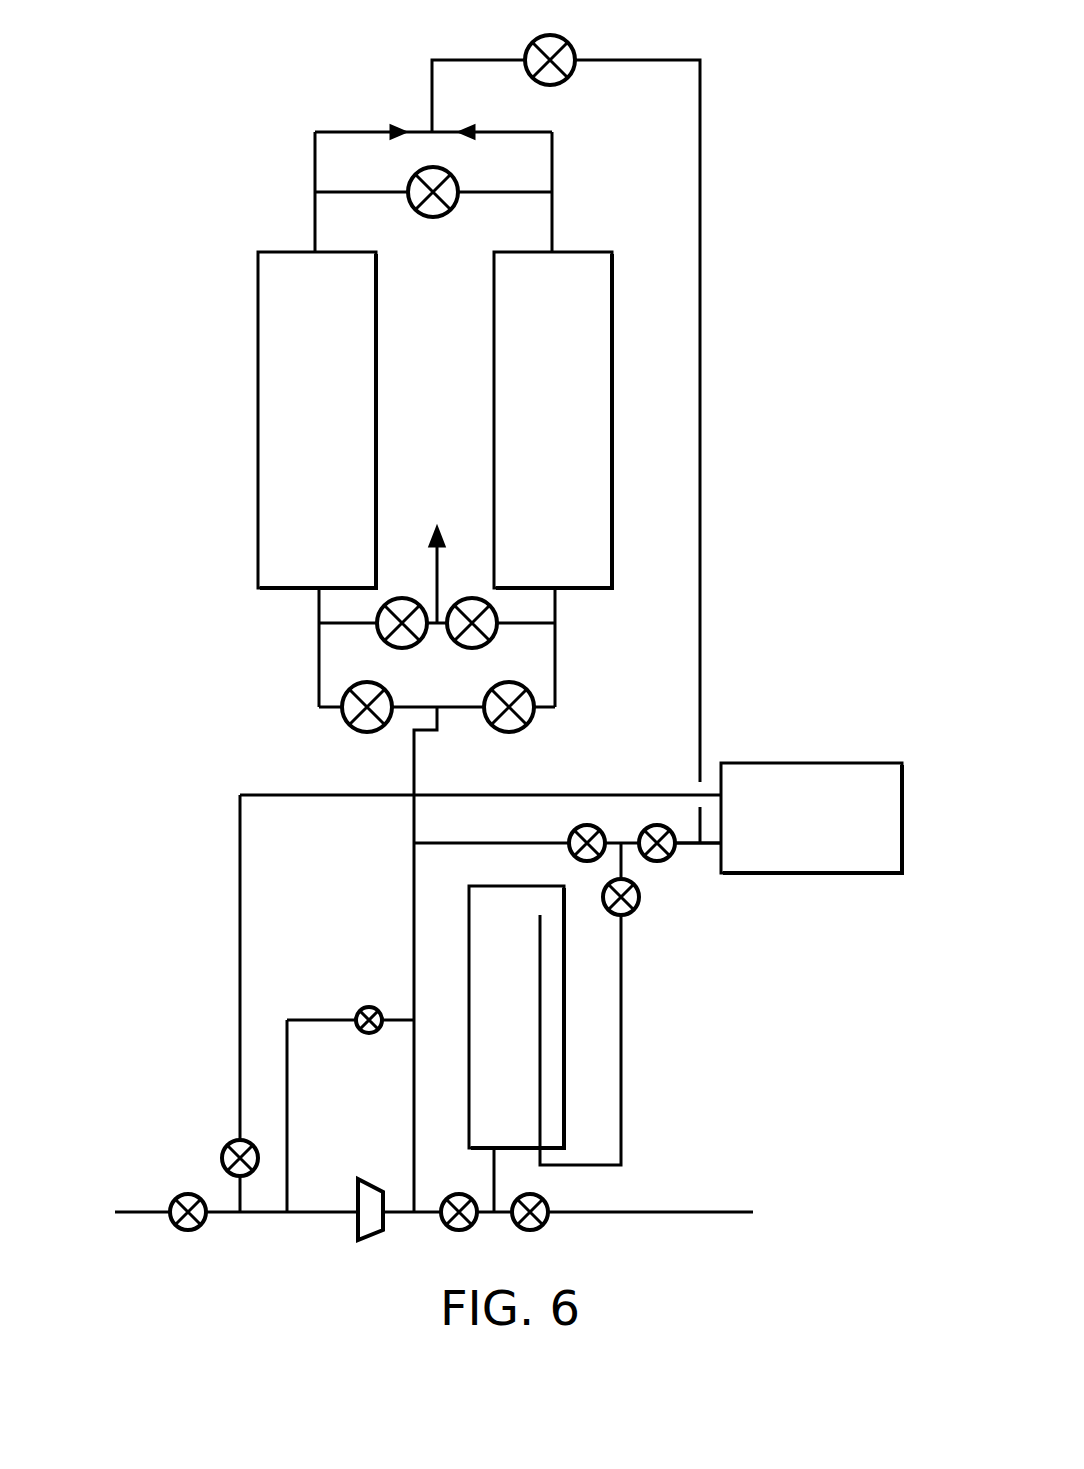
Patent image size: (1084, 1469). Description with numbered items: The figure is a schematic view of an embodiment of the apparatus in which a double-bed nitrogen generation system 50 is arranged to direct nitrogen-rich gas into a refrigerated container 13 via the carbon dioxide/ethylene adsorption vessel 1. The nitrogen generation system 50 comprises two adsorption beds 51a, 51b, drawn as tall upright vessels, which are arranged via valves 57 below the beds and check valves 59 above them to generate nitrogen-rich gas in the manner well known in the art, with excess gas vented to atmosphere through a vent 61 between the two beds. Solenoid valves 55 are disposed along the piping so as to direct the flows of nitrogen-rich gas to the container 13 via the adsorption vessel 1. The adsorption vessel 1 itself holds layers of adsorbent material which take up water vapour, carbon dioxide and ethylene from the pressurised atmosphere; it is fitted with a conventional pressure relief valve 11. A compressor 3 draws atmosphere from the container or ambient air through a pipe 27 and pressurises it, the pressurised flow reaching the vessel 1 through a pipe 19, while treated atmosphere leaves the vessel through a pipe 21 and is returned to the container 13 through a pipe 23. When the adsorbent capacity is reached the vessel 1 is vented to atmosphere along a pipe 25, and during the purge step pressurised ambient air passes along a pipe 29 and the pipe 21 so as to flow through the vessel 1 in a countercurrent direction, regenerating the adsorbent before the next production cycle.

The adsorption vessel 1 is at (458, 916).
The compressor 3 is at (384, 1232).
The pressure relief valve 11 is at (369, 1006).
The refrigerated container 13 is at (864, 763).
The pipe 19 is at (494, 1170).
The pipe 21 is at (622, 1005).
The pipe 23 is at (692, 848).
The pipe 25 is at (716, 1210).
The pipe 27 is at (140, 1214).
The pipe 29 is at (414, 874).
The nitrogen generation system 50 is at (403, 420).
The adsorption bed 51a is at (338, 432).
The adsorption bed 51b is at (574, 432).
The solenoid valves 55 is at (570, 46).
The valves 57 is at (412, 648).
The check valves 59 is at (357, 130).
The vent 61 is at (442, 562).